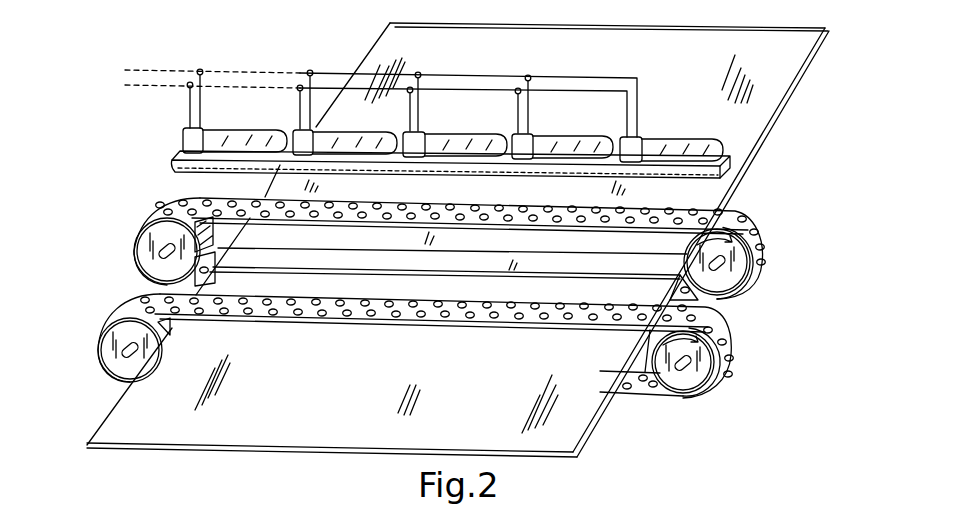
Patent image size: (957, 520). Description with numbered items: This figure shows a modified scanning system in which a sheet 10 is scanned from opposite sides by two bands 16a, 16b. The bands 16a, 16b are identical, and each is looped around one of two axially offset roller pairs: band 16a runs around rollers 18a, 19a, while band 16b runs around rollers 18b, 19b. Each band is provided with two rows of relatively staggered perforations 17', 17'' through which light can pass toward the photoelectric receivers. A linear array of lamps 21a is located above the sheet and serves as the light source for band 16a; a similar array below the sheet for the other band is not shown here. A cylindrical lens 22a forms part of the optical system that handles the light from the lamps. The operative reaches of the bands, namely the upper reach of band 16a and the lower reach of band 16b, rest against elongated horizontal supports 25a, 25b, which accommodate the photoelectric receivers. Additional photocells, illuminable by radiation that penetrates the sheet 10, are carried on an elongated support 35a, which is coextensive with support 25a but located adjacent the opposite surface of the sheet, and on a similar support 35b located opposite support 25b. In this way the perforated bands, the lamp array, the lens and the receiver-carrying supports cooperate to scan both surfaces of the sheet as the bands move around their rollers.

The sheet 10 is at (143, 437).
The band 16a is at (441, 313).
The band 16b is at (432, 200).
The perforations 17' is at (277, 334).
The perforations 17'' is at (332, 329).
The roller 18a is at (127, 332).
The roller 18b is at (157, 237).
The roller 19a is at (705, 367).
The roller 19b is at (737, 260).
The linear array of lamps 21a is at (663, 137).
The cylindrical lens 22a is at (725, 163).
The elongated horizontal support 25a is at (620, 331).
The elongated horizontal support 25b is at (705, 297).
The elongated support 35a is at (643, 381).
The support 35b is at (624, 266).